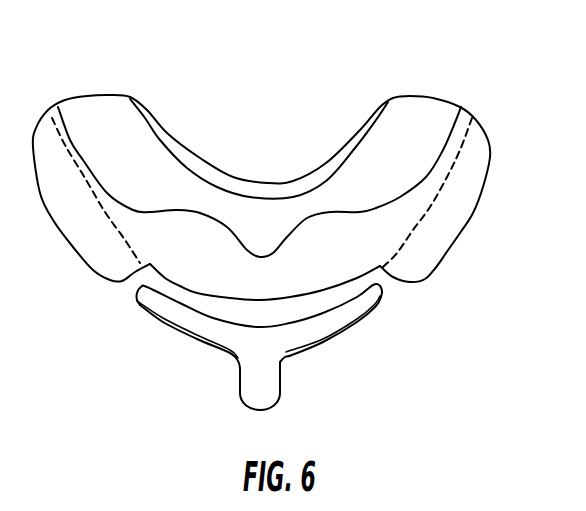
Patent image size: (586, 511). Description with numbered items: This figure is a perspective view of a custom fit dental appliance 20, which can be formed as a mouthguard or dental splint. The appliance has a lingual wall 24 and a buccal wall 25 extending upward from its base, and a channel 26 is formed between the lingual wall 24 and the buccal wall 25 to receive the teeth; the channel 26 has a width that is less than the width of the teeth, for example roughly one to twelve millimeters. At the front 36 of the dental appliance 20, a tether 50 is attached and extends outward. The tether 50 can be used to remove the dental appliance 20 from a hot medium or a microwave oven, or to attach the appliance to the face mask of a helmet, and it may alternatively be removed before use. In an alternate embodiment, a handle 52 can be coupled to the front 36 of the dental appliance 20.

The dental appliance 20 is at (262, 152).
The lingual wall 24 is at (342, 152).
The buccal wall 25 is at (433, 197).
The channel 26 is at (406, 132).
The front 36 is at (119, 279).
The tether 50 is at (272, 272).
The handle 52 is at (268, 415).